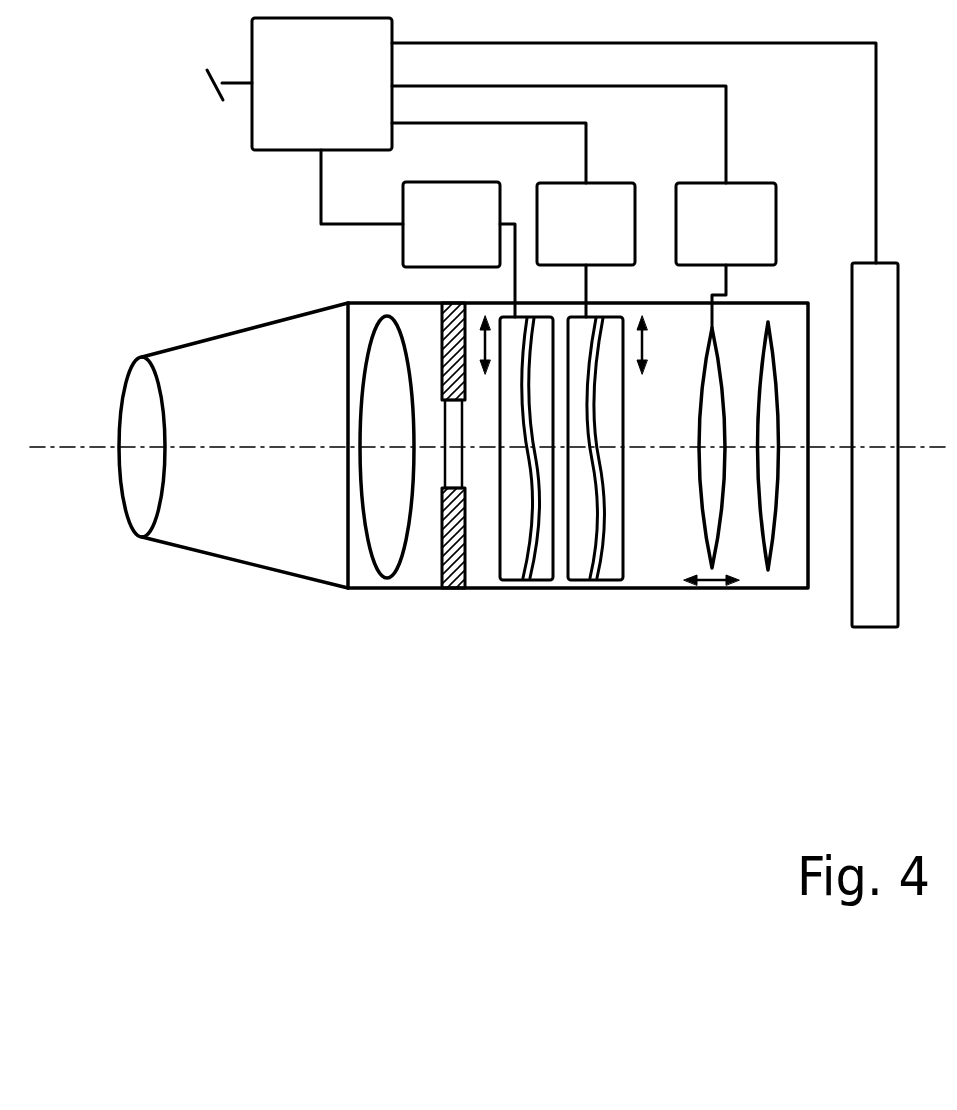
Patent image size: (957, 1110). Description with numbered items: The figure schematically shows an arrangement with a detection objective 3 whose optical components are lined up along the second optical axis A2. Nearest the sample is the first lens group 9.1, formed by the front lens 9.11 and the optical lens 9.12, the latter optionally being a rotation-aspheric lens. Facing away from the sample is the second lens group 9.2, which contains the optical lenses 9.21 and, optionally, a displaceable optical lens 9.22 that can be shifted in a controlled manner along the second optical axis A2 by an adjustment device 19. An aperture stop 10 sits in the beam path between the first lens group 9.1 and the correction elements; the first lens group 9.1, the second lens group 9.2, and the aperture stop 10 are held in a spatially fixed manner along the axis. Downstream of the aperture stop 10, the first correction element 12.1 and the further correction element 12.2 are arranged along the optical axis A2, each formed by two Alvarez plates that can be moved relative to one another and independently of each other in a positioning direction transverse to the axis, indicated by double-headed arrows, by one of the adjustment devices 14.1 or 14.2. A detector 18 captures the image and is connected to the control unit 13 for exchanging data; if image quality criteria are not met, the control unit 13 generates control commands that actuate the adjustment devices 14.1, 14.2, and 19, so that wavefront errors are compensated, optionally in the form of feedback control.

The detection objective 3 is at (242, 327).
The second optical axis A2 is at (58, 445).
The first lens group 9.1 is at (255, 517).
The front lens 9.11 is at (125, 517).
The optical lens 9.12 is at (402, 503).
The aperture stop 10 is at (455, 590).
The first correction element 12.1 is at (537, 590).
The further correction element 12.2 is at (617, 590).
The second lens group 9.2 is at (738, 543).
The displaceable optical lens 9.22 is at (700, 530).
The optical lenses 9.21 is at (775, 543).
The detector 18 is at (882, 627).
The control unit 13 is at (342, 101).
The adjustment device 14.1 is at (488, 245).
The adjustment device 14.2 is at (618, 245).
The adjustment device 19 is at (745, 241).